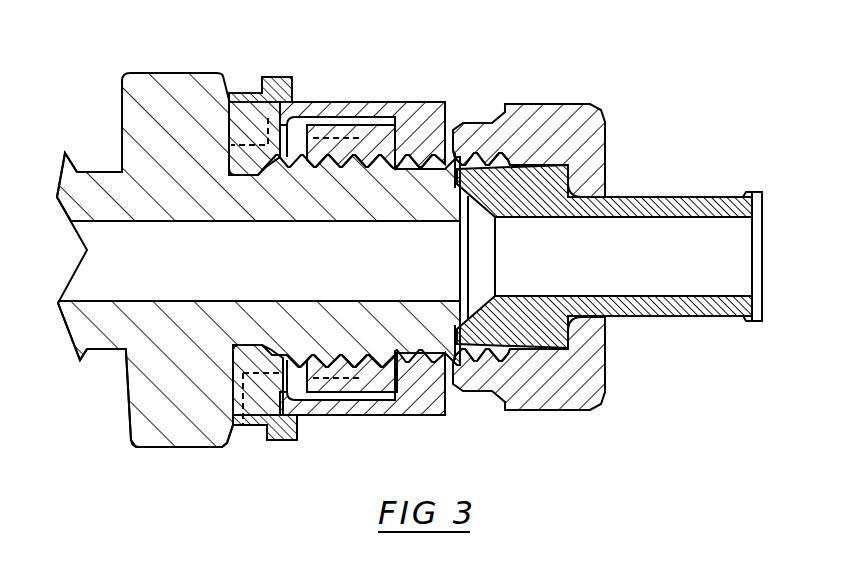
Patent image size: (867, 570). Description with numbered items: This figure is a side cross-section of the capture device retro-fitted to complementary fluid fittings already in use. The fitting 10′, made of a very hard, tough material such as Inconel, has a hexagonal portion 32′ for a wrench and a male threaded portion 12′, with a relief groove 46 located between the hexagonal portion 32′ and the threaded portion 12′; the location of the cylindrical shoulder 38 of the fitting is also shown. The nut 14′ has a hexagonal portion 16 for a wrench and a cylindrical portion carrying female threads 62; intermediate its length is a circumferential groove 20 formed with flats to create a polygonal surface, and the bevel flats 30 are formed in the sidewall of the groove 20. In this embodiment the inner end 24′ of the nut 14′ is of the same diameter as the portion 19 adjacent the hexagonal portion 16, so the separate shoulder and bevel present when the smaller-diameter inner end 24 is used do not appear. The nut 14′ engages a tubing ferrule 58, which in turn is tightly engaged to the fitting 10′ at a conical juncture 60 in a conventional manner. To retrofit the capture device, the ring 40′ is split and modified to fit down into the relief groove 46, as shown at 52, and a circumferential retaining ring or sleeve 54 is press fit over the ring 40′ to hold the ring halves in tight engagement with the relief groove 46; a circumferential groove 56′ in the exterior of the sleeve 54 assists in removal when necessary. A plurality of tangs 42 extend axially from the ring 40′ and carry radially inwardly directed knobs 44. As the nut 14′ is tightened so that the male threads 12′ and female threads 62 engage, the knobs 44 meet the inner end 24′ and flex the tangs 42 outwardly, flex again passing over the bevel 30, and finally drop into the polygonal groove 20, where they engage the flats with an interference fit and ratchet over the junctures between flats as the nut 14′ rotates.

The fitting 10′ is at (103, 352).
The threaded portion 12′ is at (355, 366).
The nut 14′ is at (606, 135).
The hexagonal portion 16 is at (561, 104).
The portion adjacent the hexagonal portion 19 is at (458, 155).
The circumferential groove 20 is at (444, 380).
The inner end 24 is at (323, 392).
The inner end 24′ is at (343, 125).
The bevel flats 30 is at (427, 133).
The hexagonal portion 32′ is at (178, 448).
The cylindrical shoulder 38 is at (272, 118).
The ring 40′ is at (238, 101).
The tangs 42 is at (362, 107).
The knobs 44 is at (437, 104).
The relief groove 46 is at (248, 355).
The ring portion fitted into relief groove 52 is at (257, 432).
The retaining ring or sleeve 54 is at (293, 91).
The circumferential groove 56′ is at (241, 93).
The tubing ferrule 58 is at (668, 197).
The conical juncture 60 is at (467, 366).
The female threads 62 is at (466, 152).